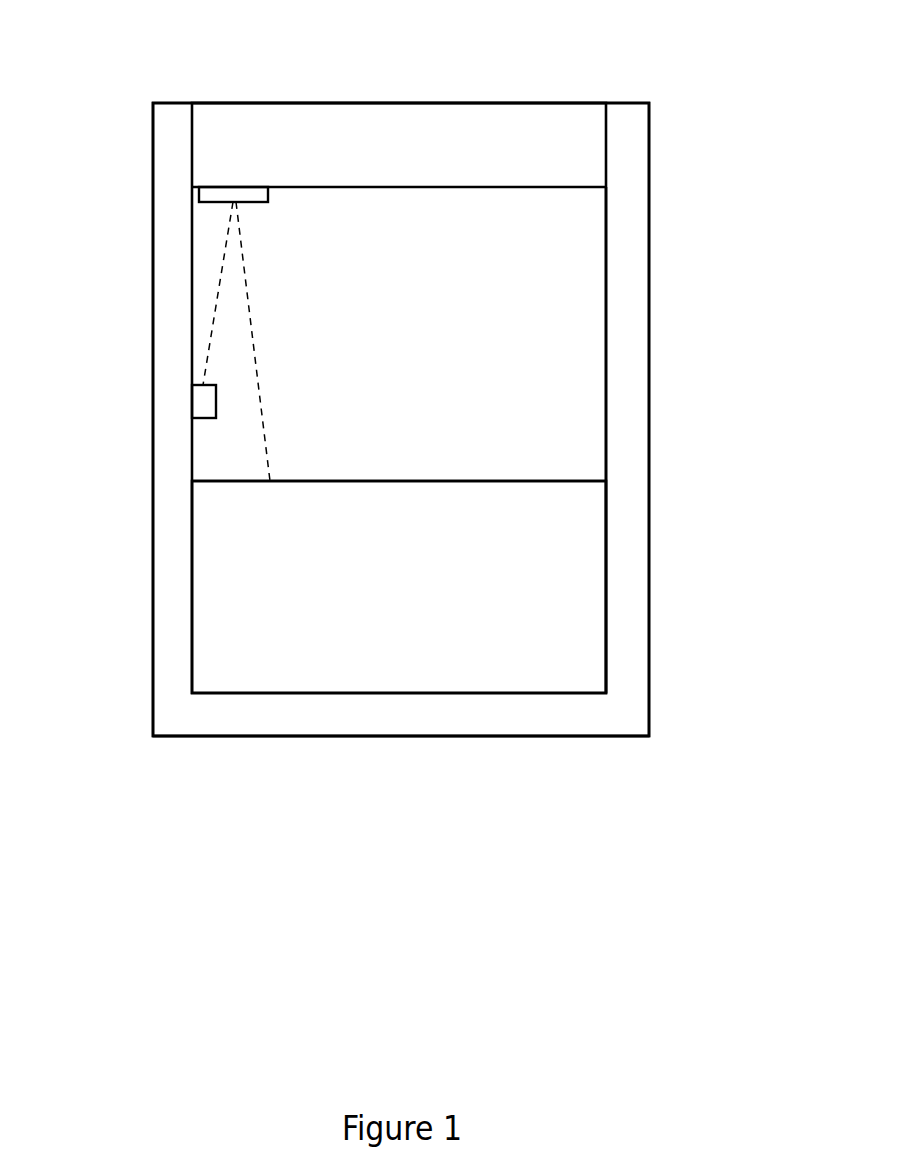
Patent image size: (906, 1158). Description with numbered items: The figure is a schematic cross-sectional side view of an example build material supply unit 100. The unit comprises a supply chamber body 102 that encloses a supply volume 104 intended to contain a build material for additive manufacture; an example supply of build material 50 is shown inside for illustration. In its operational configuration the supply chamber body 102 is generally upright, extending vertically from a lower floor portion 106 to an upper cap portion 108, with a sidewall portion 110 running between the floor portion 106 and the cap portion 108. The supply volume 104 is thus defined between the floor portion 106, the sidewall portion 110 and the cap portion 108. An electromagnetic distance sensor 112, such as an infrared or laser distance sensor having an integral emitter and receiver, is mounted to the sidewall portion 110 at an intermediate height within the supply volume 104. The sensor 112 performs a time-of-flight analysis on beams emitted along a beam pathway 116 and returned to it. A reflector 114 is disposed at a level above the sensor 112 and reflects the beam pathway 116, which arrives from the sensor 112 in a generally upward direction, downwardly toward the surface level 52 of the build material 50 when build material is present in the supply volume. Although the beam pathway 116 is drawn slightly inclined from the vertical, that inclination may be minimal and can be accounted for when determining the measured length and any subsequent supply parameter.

The build material supply unit 100 is at (510, 36).
The supply chamber body 102 is at (632, 148).
The supply volume 104 is at (582, 326).
The lower floor portion 106 is at (423, 727).
The upper cap portion 108 is at (270, 110).
The sidewall portion 110 is at (645, 430).
The electromagnetic distance sensor 112 is at (200, 405).
The reflector 114 is at (222, 201).
The beam pathway 116 is at (220, 285).
The build material 50 is at (575, 620).
The surface level 52 is at (522, 470).